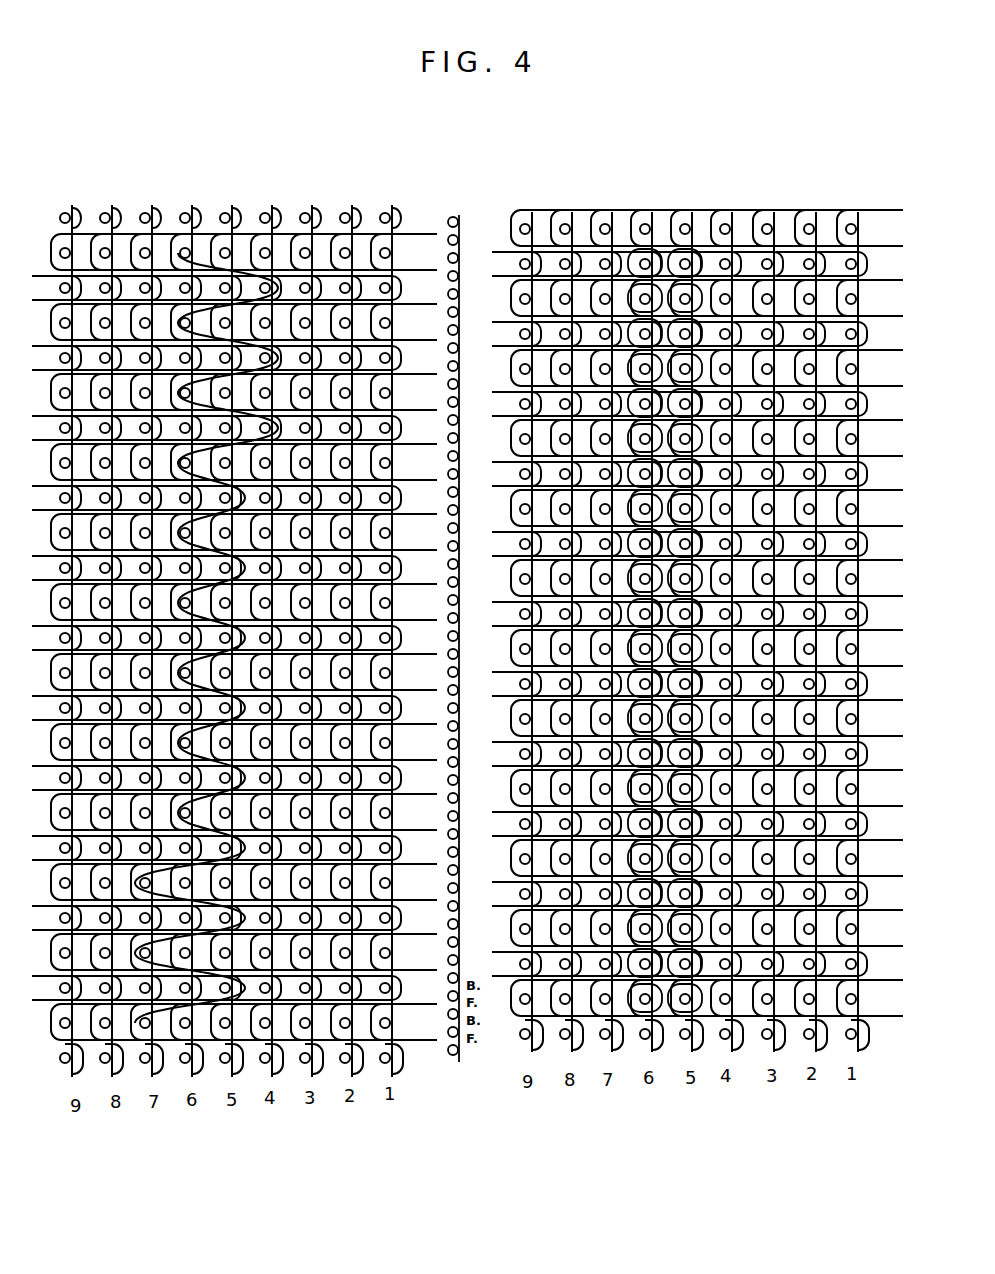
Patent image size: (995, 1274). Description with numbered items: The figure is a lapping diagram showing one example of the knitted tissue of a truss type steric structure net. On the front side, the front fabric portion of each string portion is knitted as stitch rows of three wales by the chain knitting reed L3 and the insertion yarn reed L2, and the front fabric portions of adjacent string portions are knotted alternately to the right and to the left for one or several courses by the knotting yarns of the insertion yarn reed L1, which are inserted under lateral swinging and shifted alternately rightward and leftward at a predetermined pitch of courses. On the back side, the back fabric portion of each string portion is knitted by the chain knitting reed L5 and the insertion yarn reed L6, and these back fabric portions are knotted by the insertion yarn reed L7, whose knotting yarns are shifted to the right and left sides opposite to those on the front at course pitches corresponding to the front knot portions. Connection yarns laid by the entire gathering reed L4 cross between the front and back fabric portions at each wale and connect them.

The insertion yarn reed for knotting on the front L1 is at (788, 215).
The insertion yarn reed on the front L2 is at (618, 215).
The chain knitting reed on the front L3 is at (688, 212).
The reed for connection yarns L4 is at (458, 214).
The chain knitting reed on the back L5 is at (350, 208).
The insertion yarn reed on the back L6 is at (152, 215).
The insertion yarn reed for knotting on the back L7 is at (290, 199).